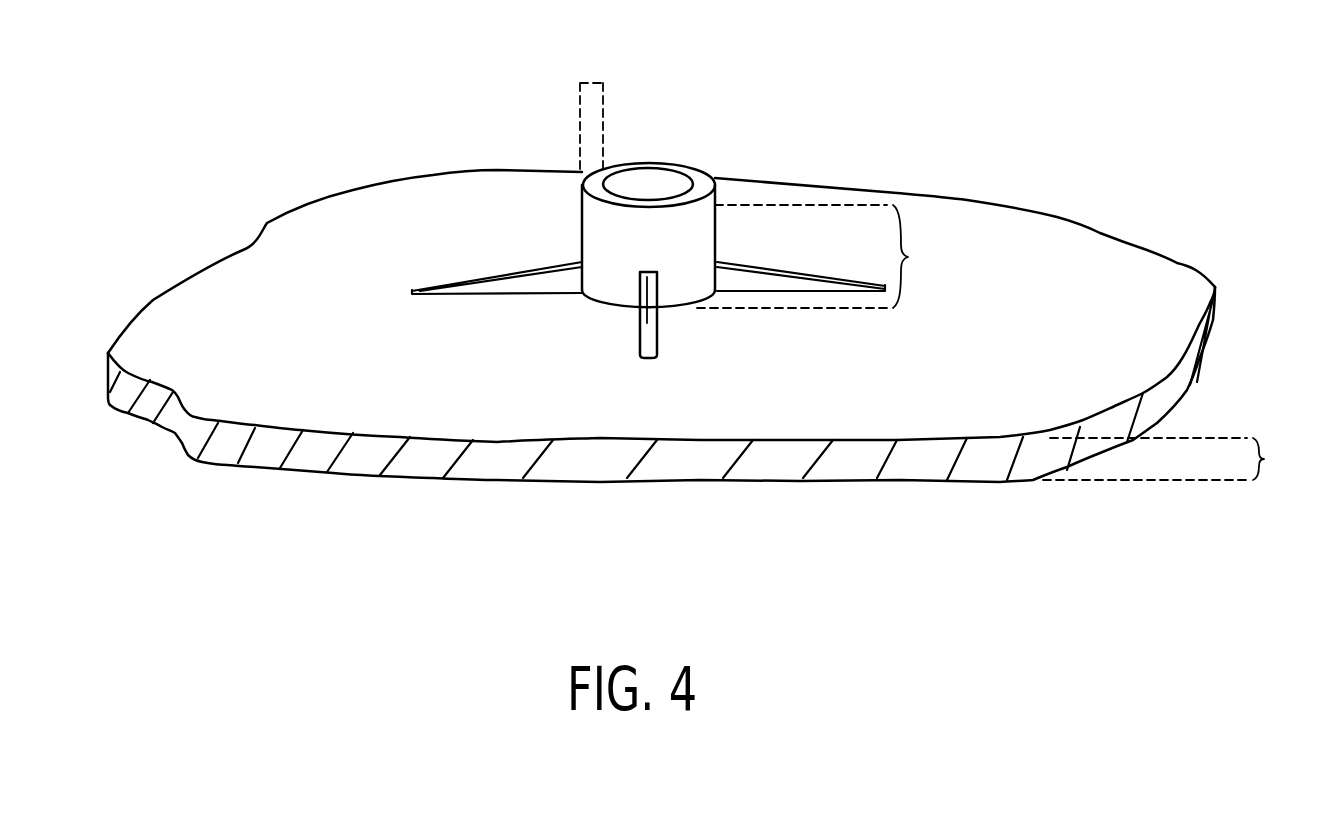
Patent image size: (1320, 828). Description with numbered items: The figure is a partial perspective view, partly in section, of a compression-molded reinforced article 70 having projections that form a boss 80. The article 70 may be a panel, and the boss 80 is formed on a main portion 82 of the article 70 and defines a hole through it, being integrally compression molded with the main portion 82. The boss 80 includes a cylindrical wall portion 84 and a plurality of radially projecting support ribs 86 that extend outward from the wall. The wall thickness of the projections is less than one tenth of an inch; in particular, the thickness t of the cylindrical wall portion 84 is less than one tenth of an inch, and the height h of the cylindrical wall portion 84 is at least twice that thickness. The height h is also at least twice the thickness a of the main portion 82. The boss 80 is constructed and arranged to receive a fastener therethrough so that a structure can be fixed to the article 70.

The article 70 is at (1088, 178).
The boss 80 is at (697, 187).
The main portion 82 is at (1157, 292).
The cylindrical wall portion 84 is at (600, 233).
The radially projecting support ribs 86 is at (553, 282).